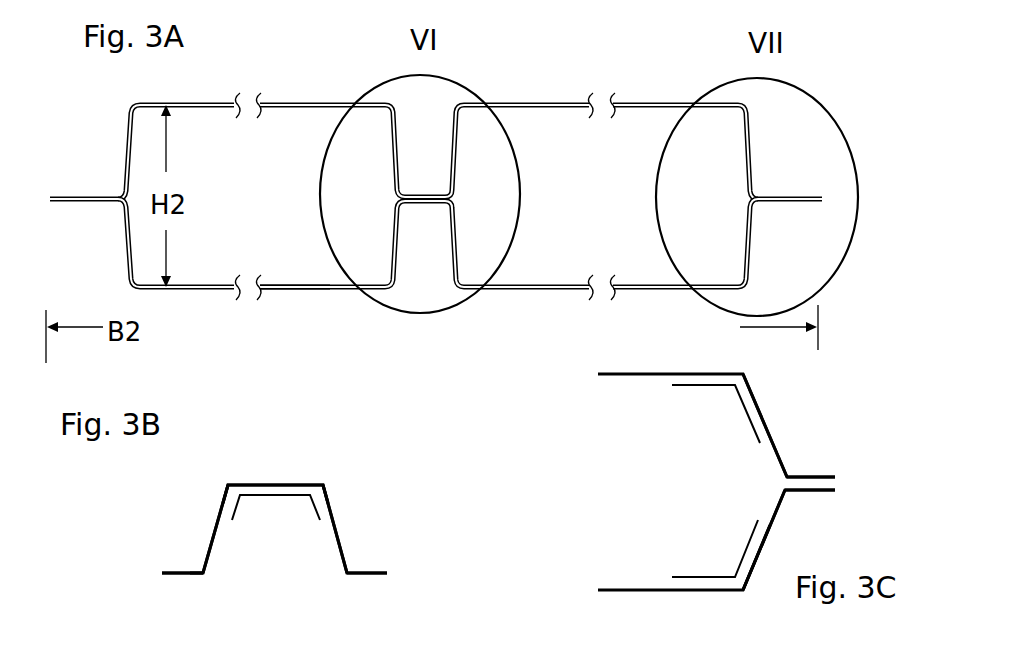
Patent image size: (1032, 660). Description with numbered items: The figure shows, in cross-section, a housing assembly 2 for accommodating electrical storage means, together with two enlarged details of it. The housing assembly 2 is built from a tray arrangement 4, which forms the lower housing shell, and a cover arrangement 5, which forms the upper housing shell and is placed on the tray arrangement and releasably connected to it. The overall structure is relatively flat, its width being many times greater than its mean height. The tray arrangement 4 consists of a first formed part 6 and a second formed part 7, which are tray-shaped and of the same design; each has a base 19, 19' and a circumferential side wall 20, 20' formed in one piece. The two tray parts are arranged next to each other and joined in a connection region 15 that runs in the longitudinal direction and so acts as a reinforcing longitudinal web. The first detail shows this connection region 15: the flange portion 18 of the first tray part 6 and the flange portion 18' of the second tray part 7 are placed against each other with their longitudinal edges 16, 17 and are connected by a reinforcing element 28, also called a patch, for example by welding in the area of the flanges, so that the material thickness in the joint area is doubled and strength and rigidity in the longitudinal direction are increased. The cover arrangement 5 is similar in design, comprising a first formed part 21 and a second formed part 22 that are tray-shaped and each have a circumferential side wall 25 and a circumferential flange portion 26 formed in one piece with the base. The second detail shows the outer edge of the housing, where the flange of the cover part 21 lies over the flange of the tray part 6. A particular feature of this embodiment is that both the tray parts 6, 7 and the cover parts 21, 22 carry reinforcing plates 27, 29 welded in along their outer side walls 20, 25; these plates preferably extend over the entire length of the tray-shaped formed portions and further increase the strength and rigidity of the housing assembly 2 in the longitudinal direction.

In FIG. 3A, the housing assembly 2 is at (287, 59).
In FIG. 3A, the tray arrangement 4 is at (295, 320).
In FIG. 3A, the cover arrangement 5 is at (487, 74).
In FIG. 3A, the first formed part 6 is at (542, 293).
In FIG. 3B, the first formed part 6 is at (368, 495).
In FIG. 3C, the first formed part 6 is at (778, 535).
In FIG. 3A, the second formed part 7 is at (196, 291).
In FIG. 3B, the second formed part 7 is at (150, 560).
In FIG. 3A, the connection region 15 is at (422, 240).
In FIG. 3B, the longitudinal edge 16 is at (285, 482).
In FIG. 3B, the longitudinal edge 17 is at (272, 482).
In FIG. 3B, the flange portion 18 is at (333, 459).
In FIG. 3C, the flange portion 18 is at (834, 501).
In FIG. 3B, the flange portion 18' is at (214, 470).
In FIG. 3B, the base 19 is at (392, 548).
In FIG. 3C, the base 19 is at (716, 540).
In FIG. 3B, the base 19' is at (195, 542).
In FIG. 3B, the circumferential side wall 20 is at (360, 529).
In FIG. 3C, the circumferential side wall 20 is at (813, 557).
In FIG. 3B, the circumferential side wall 20' is at (180, 529).
In FIG. 3A, the first formed part 21 is at (540, 90).
In FIG. 3C, the first formed part 21 is at (625, 375).
In FIG. 3A, the second formed part 22 is at (313, 93).
In FIG. 3C, the circumferential side wall 25 is at (775, 435).
In FIG. 3C, the circumferential flange portion 26 is at (813, 475).
In FIG. 3C, the reinforcing plate 27 is at (700, 577).
In FIG. 3B, the reinforcing element 28 is at (262, 495).
In FIG. 3C, the reinforcing plate 29 is at (700, 388).